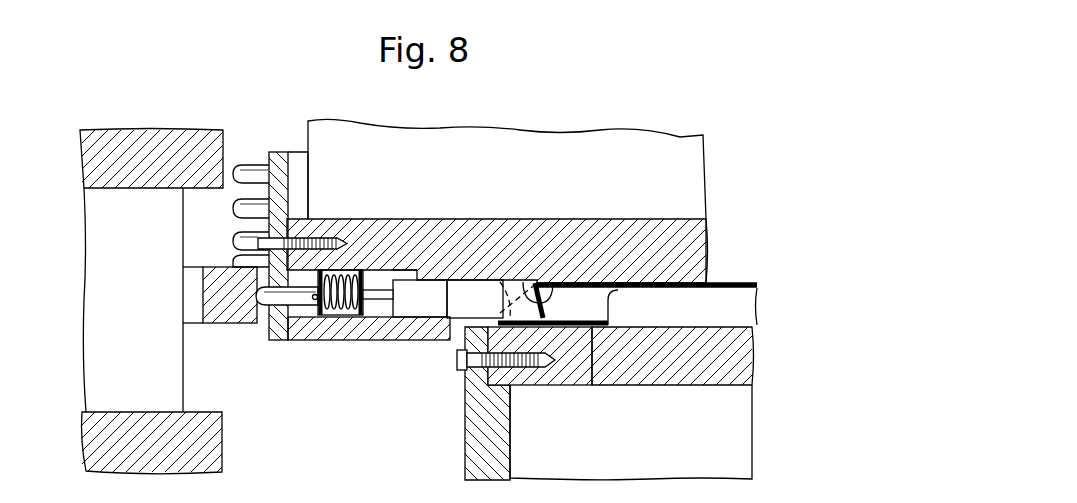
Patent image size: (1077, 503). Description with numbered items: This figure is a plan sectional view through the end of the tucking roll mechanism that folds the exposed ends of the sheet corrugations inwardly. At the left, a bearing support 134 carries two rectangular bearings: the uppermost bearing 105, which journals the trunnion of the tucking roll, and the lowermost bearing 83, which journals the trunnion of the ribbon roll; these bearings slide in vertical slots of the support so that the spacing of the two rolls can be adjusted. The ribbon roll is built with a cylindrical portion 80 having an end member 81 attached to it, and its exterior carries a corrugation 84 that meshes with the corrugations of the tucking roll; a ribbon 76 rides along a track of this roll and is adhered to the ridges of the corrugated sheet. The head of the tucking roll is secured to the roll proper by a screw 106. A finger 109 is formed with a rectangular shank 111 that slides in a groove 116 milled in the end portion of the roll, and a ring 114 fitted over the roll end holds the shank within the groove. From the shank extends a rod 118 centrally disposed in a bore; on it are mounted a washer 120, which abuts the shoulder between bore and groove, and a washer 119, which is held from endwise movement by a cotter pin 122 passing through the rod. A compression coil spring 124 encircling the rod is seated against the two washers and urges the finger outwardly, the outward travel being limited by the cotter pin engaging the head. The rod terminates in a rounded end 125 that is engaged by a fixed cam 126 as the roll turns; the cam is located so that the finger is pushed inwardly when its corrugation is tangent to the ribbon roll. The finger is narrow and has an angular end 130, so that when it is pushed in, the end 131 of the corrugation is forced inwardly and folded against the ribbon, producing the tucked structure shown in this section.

The bearing 105 is at (138, 150).
The bearing support 134 is at (112, 316).
The bearing 83 is at (108, 430).
The fixed cam 126 is at (238, 298).
The rod 118 is at (250, 203).
The rounded end 125 is at (233, 238).
The screw 106 is at (330, 240).
The groove 116 is at (402, 274).
The finger 109 is at (468, 287).
The angular end 130 is at (522, 300).
The end of corrugation 131 is at (558, 290).
The corrugation 84 is at (702, 305).
The rectangular shank 111 is at (420, 300).
The ring 114 is at (347, 330).
The cotter pin 122 is at (312, 300).
The compression coil spring 124 is at (344, 320).
The washer 119 is at (326, 305).
The washer 120 is at (365, 294).
The end member 81 is at (488, 422).
The ribbon 76 is at (588, 343).
The cylindrical portion 80 is at (676, 358).